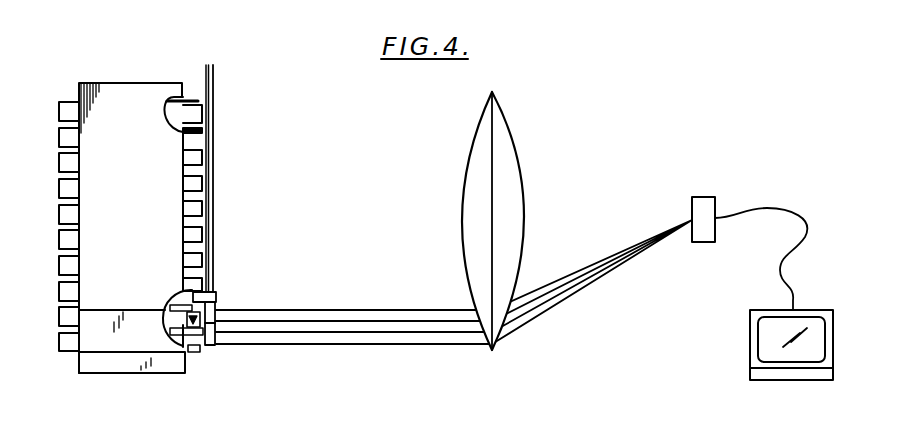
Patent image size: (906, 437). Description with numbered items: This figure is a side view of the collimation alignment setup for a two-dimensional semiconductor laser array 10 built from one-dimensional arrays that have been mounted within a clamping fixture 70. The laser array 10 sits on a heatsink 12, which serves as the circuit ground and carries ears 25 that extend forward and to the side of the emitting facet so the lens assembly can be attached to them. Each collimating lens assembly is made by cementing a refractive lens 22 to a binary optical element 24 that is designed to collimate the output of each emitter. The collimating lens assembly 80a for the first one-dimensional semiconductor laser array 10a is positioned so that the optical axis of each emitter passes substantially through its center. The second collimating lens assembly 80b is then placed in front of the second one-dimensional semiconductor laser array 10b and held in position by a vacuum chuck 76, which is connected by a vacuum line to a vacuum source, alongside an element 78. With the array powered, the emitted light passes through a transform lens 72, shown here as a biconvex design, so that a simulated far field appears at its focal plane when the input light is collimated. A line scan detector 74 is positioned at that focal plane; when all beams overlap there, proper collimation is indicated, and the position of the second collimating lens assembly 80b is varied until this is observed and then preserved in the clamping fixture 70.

The semiconductor laser array 10 is at (182, 97).
The first one-dimensional semiconductor laser array 10a is at (187, 344).
The second one-dimensional semiconductor laser array 10b is at (168, 293).
The heatsink 12 is at (53, 214).
The refractive lens 22 is at (193, 349).
The binary optical element 24 is at (205, 352).
The ears 25 is at (213, 76).
The clamping fixture 70 is at (125, 85).
The transform lens 72 is at (510, 159).
The line scan detector 74 is at (707, 197).
The vacuum chuck 76 is at (214, 298).
The light guide 78 is at (213, 107).
The collimating lens assembly 80a is at (220, 340).
The second collimating lens assembly 80b is at (220, 315).